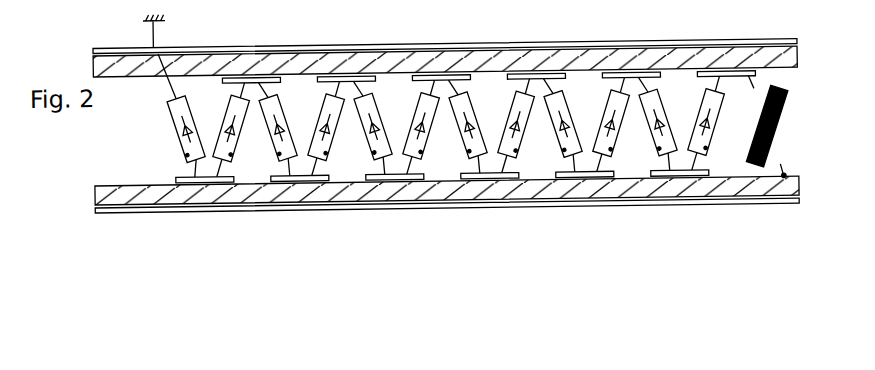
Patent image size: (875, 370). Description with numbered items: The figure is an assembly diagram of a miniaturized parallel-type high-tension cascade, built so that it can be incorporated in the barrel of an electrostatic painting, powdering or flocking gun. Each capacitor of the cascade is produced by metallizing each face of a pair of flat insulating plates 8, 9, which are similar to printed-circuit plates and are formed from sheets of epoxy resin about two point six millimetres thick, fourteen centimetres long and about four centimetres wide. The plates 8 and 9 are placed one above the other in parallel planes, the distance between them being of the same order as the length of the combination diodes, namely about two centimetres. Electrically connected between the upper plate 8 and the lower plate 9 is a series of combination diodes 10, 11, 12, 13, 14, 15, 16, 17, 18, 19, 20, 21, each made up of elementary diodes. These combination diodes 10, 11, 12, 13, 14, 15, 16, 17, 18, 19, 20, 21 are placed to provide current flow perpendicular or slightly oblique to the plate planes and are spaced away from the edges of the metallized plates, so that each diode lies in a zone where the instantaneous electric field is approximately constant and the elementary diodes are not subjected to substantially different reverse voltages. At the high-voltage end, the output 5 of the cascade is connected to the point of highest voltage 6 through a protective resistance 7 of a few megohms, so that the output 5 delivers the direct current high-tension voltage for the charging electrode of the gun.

The output 5 is at (783, 185).
The point of highest voltage 6 is at (757, 87).
The resistance 7 is at (772, 128).
The flat insulating plate 8 is at (780, 62).
The flat insulating plate 9 is at (785, 198).
The combination diode 10 is at (182, 156).
The combination diode 11 is at (226, 156).
The combination diode 12 is at (282, 156).
The combination diode 13 is at (320, 156).
The combination diode 14 is at (370, 159).
The combination diode 15 is at (416, 156).
The combination diode 16 is at (462, 157).
The combination diode 17 is at (514, 158).
The combination diode 18 is at (552, 158).
The combination diode 19 is at (614, 159).
The combination diode 20 is at (654, 160).
The combination diode 21 is at (697, 156).